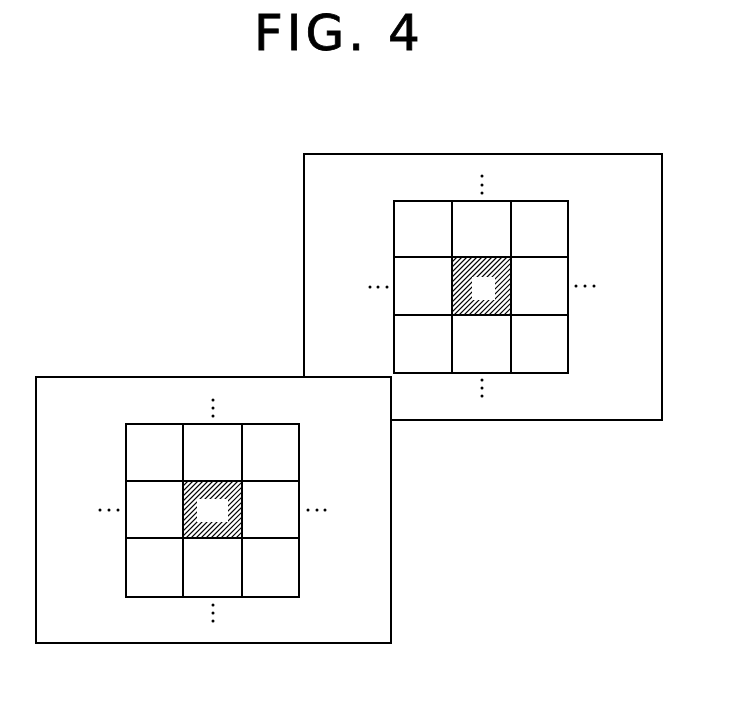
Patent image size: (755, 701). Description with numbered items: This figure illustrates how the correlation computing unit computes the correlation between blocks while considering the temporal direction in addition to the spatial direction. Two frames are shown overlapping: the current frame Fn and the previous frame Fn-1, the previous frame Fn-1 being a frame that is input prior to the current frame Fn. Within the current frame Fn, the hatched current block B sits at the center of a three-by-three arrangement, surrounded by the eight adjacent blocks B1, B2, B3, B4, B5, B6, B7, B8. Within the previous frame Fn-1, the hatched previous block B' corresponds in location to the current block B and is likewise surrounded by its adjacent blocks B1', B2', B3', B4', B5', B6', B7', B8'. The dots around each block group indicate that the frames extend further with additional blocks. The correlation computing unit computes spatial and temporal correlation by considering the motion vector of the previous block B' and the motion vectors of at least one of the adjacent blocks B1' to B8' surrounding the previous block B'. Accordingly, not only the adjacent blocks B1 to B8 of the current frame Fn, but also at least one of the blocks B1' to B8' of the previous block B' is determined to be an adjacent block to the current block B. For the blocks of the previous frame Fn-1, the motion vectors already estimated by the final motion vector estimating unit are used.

The current frame Fn is at (483, 314).
The previous frame Fn-1 is at (213, 533).
The current block B is at (509, 287).
The adjacent block B1 is at (423, 229).
The adjacent block B2 is at (481, 229).
The adjacent block B3 is at (539, 229).
The adjacent block B4 is at (423, 286).
The adjacent block B5 is at (539, 286).
The adjacent block B6 is at (423, 344).
The adjacent block B7 is at (481, 344).
The adjacent block B8 is at (539, 344).
The previous block B' is at (240, 511).
The adjacent block of previous block B1' is at (154, 452).
The adjacent block of previous block B2' is at (212, 452).
The adjacent block of previous block B3' is at (270, 452).
The adjacent block of previous block B4' is at (154, 509).
The adjacent block of previous block B5' is at (270, 509).
The adjacent block of previous block B6' is at (154, 567).
The adjacent block of previous block B7' is at (212, 567).
The adjacent block of previous block B8' is at (270, 567).